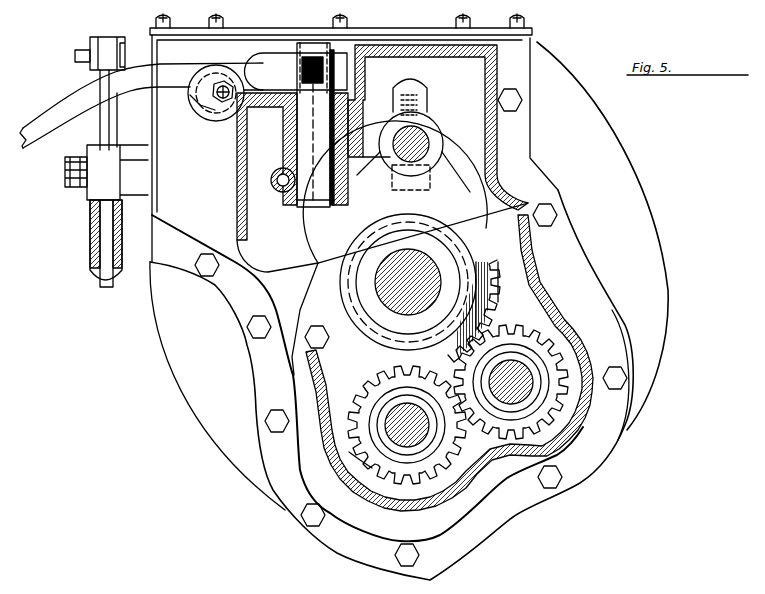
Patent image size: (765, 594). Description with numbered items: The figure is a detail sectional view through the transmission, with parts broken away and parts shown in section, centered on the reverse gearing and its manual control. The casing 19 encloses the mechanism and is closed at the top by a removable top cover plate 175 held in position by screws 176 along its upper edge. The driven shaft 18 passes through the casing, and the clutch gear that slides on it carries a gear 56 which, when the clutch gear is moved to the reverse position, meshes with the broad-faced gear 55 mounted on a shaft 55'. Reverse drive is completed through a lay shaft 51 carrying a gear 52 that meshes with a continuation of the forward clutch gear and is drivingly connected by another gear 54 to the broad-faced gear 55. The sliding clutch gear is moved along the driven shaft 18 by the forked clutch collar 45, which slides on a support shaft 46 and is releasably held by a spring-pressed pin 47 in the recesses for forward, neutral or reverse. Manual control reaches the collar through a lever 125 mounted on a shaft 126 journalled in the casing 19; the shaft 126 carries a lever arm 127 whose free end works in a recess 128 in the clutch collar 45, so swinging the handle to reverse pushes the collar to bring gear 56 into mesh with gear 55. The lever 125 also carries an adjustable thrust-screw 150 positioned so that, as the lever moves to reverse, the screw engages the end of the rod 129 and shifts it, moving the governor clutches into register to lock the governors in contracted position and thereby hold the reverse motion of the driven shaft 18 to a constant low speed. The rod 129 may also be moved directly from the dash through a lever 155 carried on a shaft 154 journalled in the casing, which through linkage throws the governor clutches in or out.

The driven shaft 18 is at (402, 258).
The casing 19 is at (626, 197).
The forked clutch collar 45 is at (433, 165).
The support shaft 46 is at (428, 141).
The spring-pressed pin 47 is at (420, 112).
The lay shaft 51 is at (384, 422).
The gear 52 is at (478, 450).
The gear 54 is at (360, 457).
The broad-faced gear 55 is at (524, 372).
The shaft 55' is at (548, 374).
The gear 56 is at (490, 308).
The lever 125 is at (49, 120).
The shaft 126 is at (307, 141).
The lever arm 127 is at (282, 192).
The recess 128 is at (432, 184).
The rod 129 is at (198, 103).
The adjustable thrust-screw 150 is at (226, 82).
The shaft 154 is at (64, 170).
The lever 155 is at (106, 130).
The removable top cover plate 175 is at (422, 30).
The screws 176 is at (330, 22).